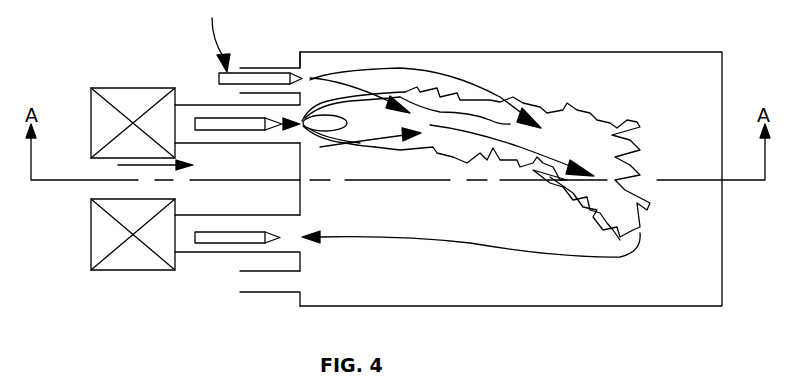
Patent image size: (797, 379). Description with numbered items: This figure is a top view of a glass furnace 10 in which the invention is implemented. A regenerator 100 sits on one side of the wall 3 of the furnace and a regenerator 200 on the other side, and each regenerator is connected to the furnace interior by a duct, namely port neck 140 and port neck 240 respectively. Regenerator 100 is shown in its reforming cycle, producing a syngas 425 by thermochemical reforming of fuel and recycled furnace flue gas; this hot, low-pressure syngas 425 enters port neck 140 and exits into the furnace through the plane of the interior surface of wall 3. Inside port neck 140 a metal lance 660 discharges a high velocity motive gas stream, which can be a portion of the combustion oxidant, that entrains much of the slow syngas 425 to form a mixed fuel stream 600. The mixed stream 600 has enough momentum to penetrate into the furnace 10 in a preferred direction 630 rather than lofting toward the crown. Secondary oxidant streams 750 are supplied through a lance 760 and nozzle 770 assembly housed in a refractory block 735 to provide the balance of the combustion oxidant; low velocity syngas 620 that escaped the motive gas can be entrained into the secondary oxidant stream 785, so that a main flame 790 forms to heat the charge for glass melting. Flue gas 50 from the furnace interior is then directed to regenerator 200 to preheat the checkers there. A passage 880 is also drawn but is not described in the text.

The glass furnace 10 is at (697, 52).
The regenerator 100 is at (100, 88).
The regenerator 200 is at (91, 232).
The syngas stream 425 is at (143, 165).
The port neck 140 is at (238, 144).
The port neck 240 is at (216, 253).
The wall 3 is at (300, 203).
The air passage 880 is at (247, 292).
The metal lance 660 is at (217, 131).
The refractory block 735 is at (265, 68).
The lance 760 is at (219, 80).
The secondary oxidant stream 750 is at (214, 36).
The nozzle 770 is at (300, 53).
The secondary oxidant stream 785 is at (350, 74).
The mixed fuel stream 600 is at (301, 121).
The low velocity syngas 620 is at (370, 147).
The preferred direction 630 is at (452, 122).
The main flame 790 is at (624, 121).
The flue gas 50 is at (471, 238).